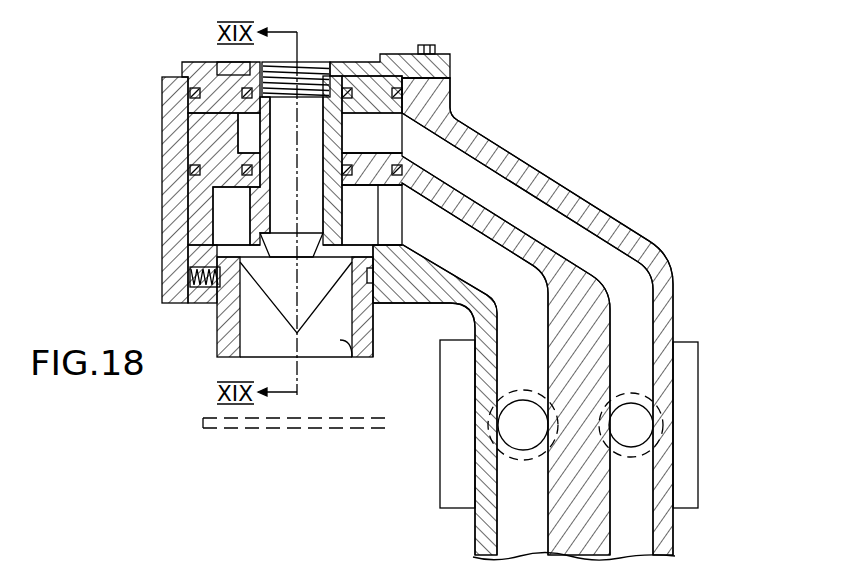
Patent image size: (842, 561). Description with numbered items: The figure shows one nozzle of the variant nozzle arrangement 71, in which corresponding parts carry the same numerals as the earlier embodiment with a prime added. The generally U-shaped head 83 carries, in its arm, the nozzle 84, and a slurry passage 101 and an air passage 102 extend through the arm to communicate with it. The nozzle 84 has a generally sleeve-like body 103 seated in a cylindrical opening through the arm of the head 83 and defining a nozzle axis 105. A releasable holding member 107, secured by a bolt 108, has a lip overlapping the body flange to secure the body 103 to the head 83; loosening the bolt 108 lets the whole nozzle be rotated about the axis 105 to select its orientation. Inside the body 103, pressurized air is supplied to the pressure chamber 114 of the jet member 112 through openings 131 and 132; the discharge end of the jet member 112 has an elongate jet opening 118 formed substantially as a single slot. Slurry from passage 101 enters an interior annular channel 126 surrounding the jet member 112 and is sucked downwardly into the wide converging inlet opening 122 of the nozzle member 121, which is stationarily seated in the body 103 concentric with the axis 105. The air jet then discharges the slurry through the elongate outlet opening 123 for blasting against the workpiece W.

The nozzle arrangement 71 is at (607, 85).
The head 83 is at (597, 330).
The nozzle 84 is at (180, 245).
The slurry passage 101 is at (497, 262).
The air passage 102 is at (590, 243).
The body 103 is at (205, 142).
The nozzle axis 105 is at (305, 105).
The holding member 107 is at (515, 32).
The bolt 108 is at (479, 6).
The jet member 112 is at (263, 200).
The pressure chamber 114 is at (277, 126).
The jet opening 118 is at (302, 240).
The nozzle member 121 is at (228, 334).
The inlet opening 122 is at (270, 308).
The outlet opening 123 is at (391, 361).
The slurry channel 126 is at (212, 213).
The opening 131 is at (413, 122).
The opening 132 is at (330, 135).
The workpiece W is at (269, 428).